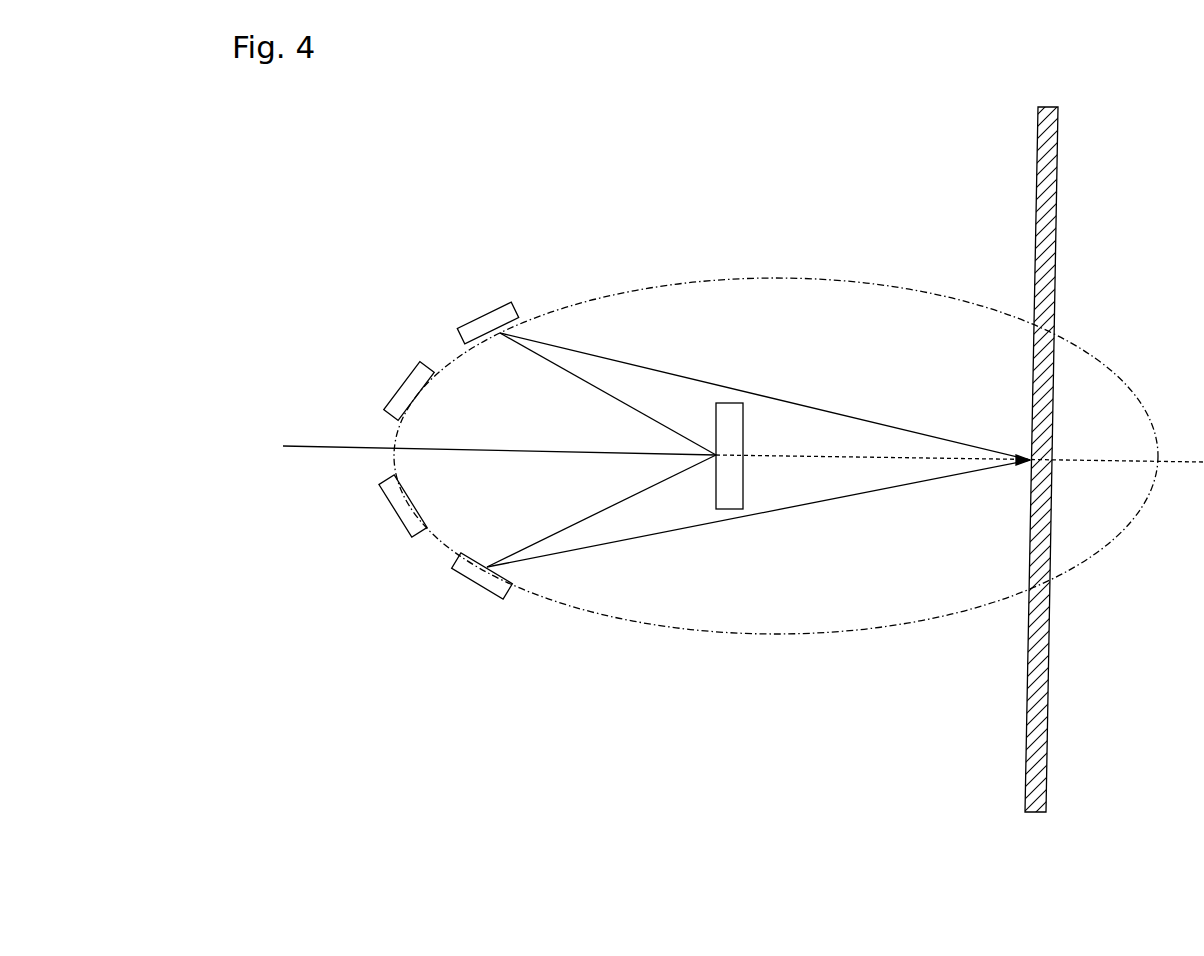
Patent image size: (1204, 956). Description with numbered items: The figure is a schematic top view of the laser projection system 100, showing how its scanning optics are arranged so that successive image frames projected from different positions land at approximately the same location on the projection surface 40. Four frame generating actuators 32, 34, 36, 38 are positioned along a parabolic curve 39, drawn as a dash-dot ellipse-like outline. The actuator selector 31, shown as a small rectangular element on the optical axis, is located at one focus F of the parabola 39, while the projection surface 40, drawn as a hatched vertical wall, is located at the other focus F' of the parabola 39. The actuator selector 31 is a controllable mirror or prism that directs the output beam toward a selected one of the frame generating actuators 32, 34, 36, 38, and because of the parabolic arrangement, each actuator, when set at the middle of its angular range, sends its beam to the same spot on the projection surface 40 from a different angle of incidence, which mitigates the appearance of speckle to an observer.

The laser projection system 100 is at (400, 279).
The actuator selector 31 is at (743, 436).
The frame generating actuator 32 is at (497, 310).
The frame generating actuator 34 is at (408, 386).
The frame generating actuator 36 is at (401, 515).
The frame generating actuator 38 is at (500, 594).
The parabolic curve 39 is at (700, 280).
The projection surface 40 is at (1037, 143).